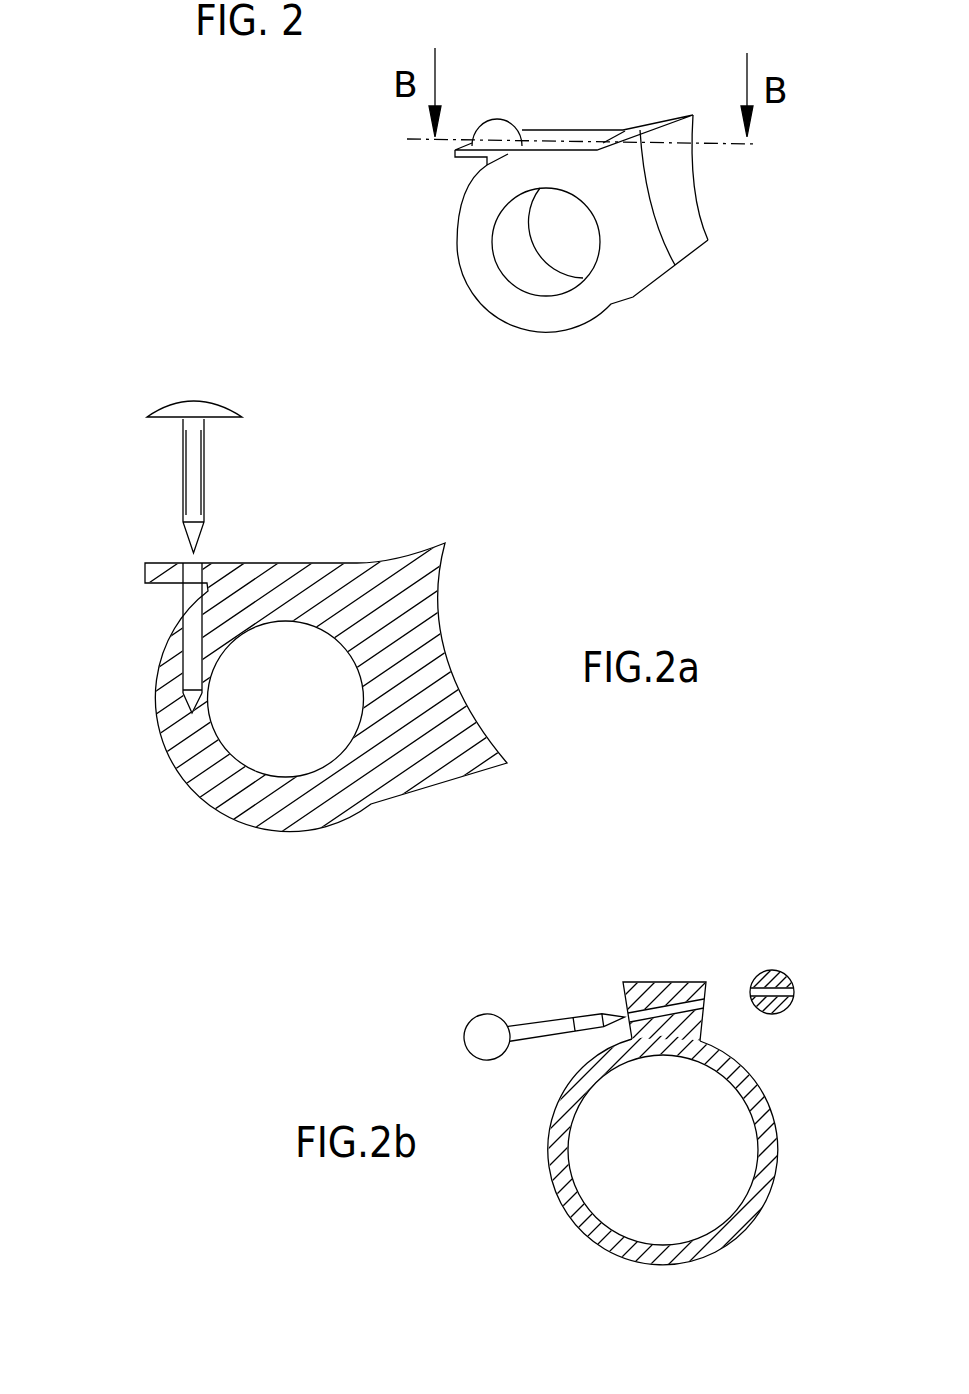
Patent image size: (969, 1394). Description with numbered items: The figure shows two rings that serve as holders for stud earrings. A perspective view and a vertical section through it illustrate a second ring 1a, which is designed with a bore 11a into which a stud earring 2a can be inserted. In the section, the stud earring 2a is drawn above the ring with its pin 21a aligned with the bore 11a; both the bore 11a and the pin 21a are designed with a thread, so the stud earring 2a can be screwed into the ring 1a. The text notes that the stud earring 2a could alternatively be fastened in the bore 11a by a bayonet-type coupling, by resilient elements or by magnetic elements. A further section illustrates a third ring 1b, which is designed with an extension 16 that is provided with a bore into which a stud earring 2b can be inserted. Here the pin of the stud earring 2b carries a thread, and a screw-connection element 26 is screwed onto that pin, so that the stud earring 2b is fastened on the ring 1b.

In FIG. 2, the second ring 1a is at (643, 258).
In FIG. 2A, the second ring 1a is at (260, 818).
In FIG. 2, the stud earring 2a is at (503, 132).
In FIG. 2A, the stud earring 2a is at (215, 403).
In FIG. 2A, the pin 21a is at (203, 498).
In FIG. 2A, the bore 11a is at (190, 648).
In FIG. 2B, the third ring 1b is at (568, 1192).
In FIG. 2B, the stud earring 2b is at (487, 1013).
In FIG. 2B, the extension 16 is at (650, 990).
In FIG. 2B, the screw-connection element 26 is at (783, 970).